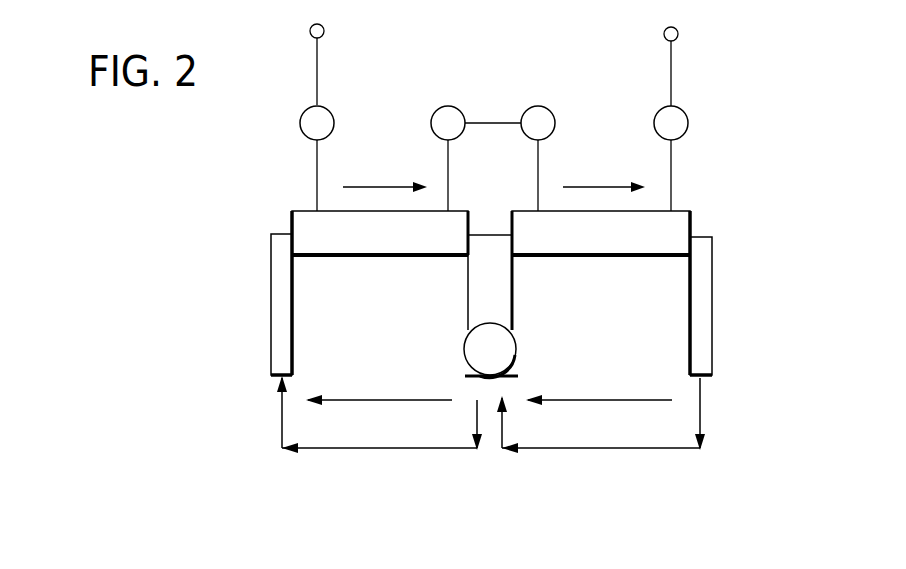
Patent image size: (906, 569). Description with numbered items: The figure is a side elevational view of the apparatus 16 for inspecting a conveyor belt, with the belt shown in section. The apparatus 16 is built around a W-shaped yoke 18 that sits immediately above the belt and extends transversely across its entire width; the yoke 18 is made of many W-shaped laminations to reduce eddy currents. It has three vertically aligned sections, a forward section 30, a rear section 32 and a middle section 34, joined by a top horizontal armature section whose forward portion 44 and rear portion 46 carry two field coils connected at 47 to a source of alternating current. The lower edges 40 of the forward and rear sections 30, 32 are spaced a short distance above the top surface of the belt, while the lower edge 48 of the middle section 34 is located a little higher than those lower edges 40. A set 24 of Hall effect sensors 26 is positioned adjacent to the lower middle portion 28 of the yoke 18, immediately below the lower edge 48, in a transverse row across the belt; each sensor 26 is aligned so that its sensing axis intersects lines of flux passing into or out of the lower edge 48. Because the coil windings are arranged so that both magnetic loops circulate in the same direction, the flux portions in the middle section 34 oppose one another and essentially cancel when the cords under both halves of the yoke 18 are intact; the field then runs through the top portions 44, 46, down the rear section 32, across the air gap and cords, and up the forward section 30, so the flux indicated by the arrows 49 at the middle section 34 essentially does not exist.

The apparatus 16 is at (696, 200).
The yoke 18 is at (550, 200).
The set of Hall effect sensors 24 is at (458, 332).
The Hall effect sensor 26 is at (466, 356).
The lower middle portion 28 is at (468, 275).
The forward section 30 is at (278, 278).
The rear section 32 is at (707, 272).
The middle section 34 is at (512, 272).
The lower edges 40 is at (278, 378).
The forward portion 44 is at (343, 230).
The rear portion 46 is at (640, 225).
The connection to alternating current source 47 is at (325, 31).
The lower edge 48 is at (514, 330).
The arrows 49 is at (474, 415).